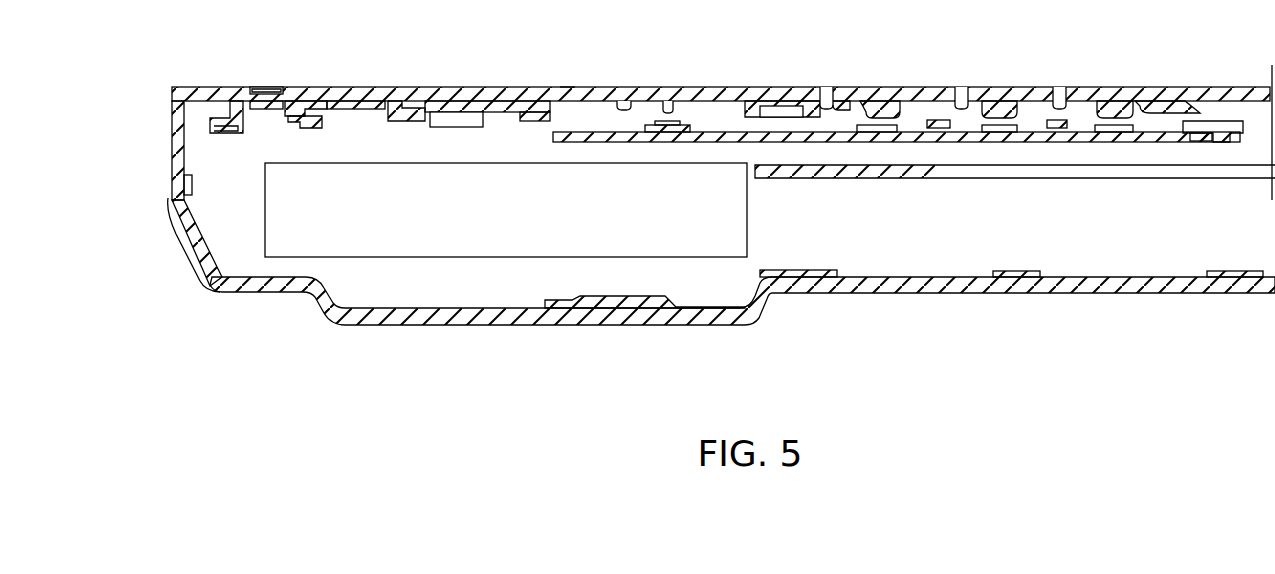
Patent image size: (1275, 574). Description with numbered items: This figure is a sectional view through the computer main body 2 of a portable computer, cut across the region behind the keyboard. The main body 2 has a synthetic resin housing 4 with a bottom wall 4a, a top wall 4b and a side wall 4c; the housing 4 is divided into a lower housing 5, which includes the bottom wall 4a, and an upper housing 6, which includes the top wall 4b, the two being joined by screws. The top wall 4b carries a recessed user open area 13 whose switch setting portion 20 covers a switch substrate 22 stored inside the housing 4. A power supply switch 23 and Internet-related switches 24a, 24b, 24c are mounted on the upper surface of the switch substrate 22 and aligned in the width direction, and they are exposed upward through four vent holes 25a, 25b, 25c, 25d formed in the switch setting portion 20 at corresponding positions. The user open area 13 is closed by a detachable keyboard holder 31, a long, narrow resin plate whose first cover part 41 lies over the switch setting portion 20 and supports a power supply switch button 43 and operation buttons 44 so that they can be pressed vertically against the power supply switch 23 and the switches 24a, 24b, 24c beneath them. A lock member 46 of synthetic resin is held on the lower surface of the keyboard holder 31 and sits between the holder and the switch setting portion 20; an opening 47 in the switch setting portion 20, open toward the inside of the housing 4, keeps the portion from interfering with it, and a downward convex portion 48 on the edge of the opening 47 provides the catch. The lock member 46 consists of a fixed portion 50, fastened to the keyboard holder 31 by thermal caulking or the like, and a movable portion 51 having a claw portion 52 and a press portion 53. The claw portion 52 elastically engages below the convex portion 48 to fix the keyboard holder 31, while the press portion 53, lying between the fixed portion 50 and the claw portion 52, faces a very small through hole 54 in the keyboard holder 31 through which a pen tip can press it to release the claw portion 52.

The computer main body 2 is at (677, 327).
The housing 4 is at (240, 352).
The bottom wall 4a is at (483, 318).
The top wall 4b is at (1215, 143).
The side wall 4c is at (168, 128).
The lower housing 5 is at (226, 294).
The upper housing 6 is at (168, 205).
The user open area 13 is at (780, 110).
The switch setting portion 20 is at (1150, 110).
The switch substrate 22 is at (593, 143).
The power supply switch 23 is at (668, 133).
The switch 24a is at (875, 179).
The switch 24b is at (993, 179).
The switch 24c is at (1110, 179).
The vent hole 25a is at (565, 96).
The vent hole 25b is at (847, 106).
The vent hole 25c is at (958, 113).
The vent hole 25d is at (1062, 122).
The keyboard holder 31 is at (493, 86).
The first cover part 41 is at (403, 87).
The power supply switch button 43 is at (678, 104).
The operation button 44 is at (880, 102).
The lock member 46 is at (336, 170).
The opening 47 is at (303, 113).
The convex portion 48 is at (232, 120).
The fixed portion 50 is at (383, 106).
The movable portion 51 is at (287, 112).
The claw portion 52 is at (212, 104).
The press portion 53 is at (267, 110).
The through hole 54 is at (268, 88).